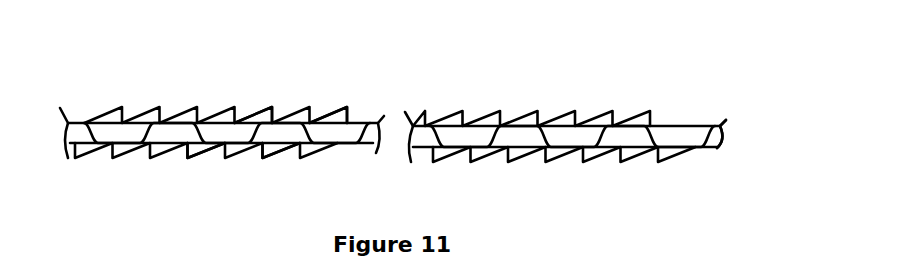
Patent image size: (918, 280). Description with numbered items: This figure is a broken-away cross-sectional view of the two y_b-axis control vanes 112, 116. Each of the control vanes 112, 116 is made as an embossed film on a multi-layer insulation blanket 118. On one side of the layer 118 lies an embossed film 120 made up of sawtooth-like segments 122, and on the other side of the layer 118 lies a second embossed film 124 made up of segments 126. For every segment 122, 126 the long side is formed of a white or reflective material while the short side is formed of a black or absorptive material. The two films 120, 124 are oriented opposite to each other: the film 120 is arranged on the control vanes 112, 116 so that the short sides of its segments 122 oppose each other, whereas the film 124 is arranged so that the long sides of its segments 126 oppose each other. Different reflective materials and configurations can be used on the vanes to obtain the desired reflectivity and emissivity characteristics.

The y_b-axis control vane 112 is at (528, 74).
The y_b-axis control vane 116 is at (186, 70).
The multi-layer insulation blanket 118 is at (718, 152).
The embossed film 120 is at (272, 108).
The segments 122 is at (332, 110).
The embossed film 124 is at (188, 157).
The segments 126 is at (282, 157).